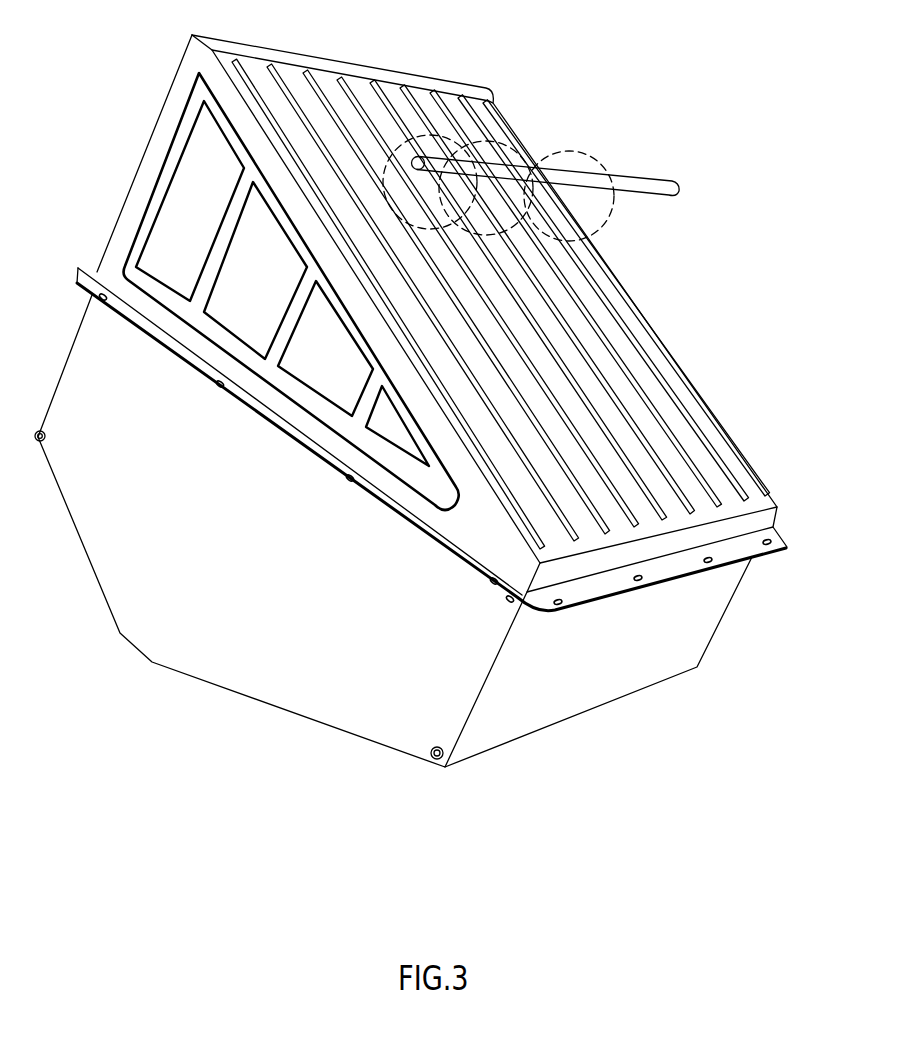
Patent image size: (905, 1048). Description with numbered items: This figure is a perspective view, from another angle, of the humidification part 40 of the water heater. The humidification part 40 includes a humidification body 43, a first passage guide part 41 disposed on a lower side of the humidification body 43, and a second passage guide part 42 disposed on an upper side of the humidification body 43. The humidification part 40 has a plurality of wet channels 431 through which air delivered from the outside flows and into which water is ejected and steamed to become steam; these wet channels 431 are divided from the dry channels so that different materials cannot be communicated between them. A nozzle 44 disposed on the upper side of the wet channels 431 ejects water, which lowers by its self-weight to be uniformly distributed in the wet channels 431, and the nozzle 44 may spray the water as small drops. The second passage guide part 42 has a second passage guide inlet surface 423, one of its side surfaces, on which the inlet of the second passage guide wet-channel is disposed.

The humidification part 40 is at (422, 433).
The first passage guide part 41 is at (272, 683).
The second passage guide part 42 is at (501, 313).
The second passage guide inlet surface 423 is at (688, 412).
The wet channels 431 is at (648, 370).
The humidification body 43 is at (437, 607).
The nozzle 44 is at (680, 160).